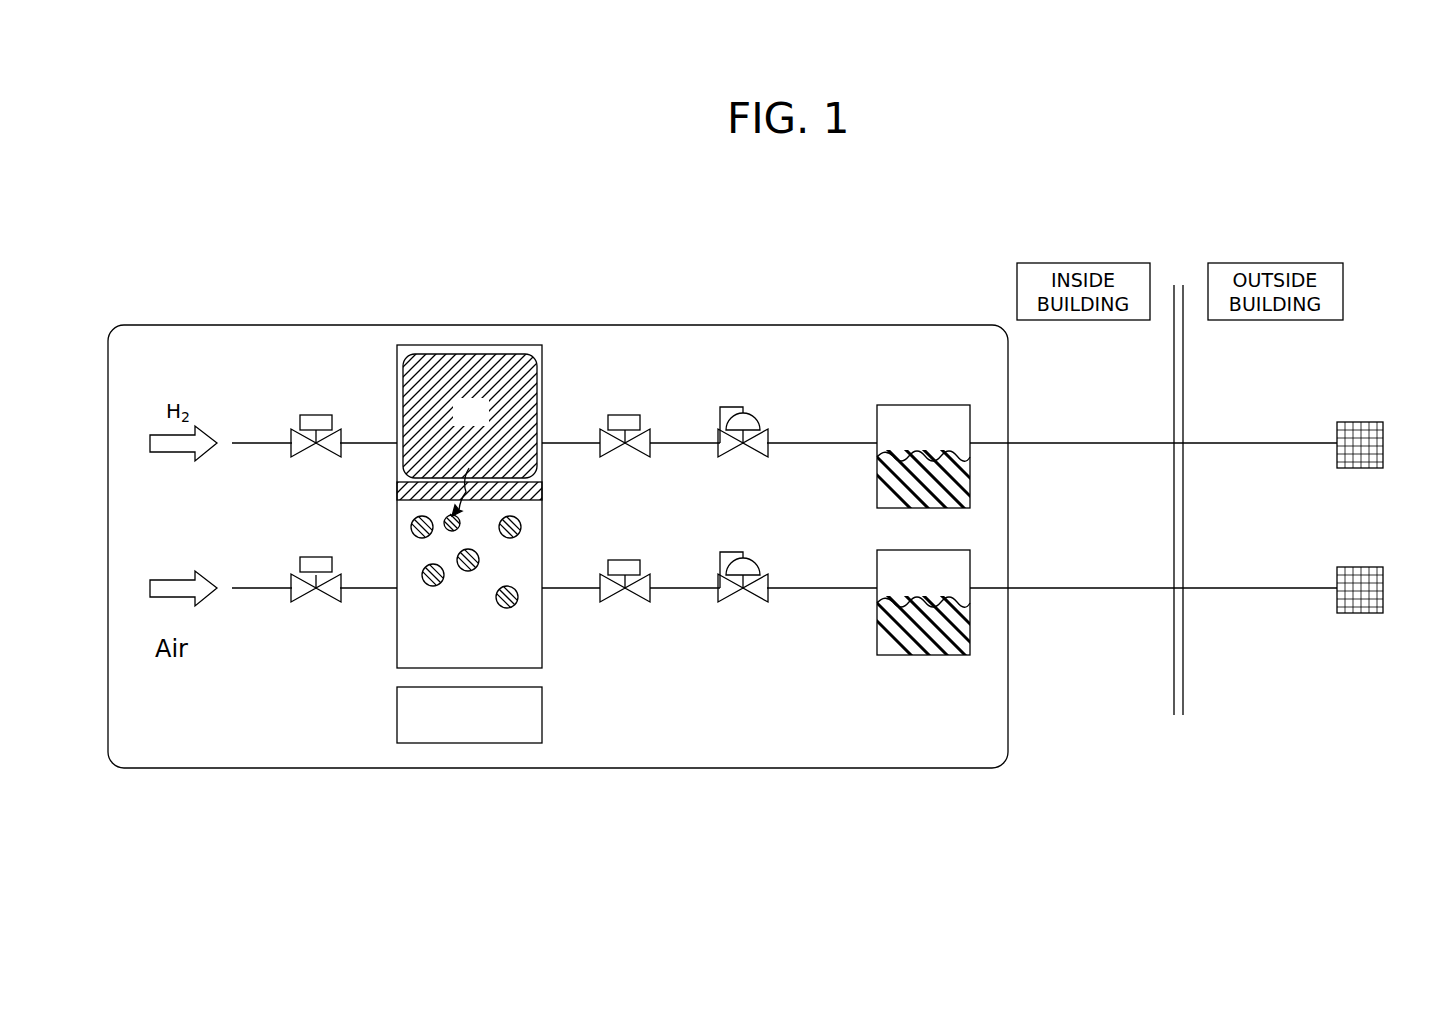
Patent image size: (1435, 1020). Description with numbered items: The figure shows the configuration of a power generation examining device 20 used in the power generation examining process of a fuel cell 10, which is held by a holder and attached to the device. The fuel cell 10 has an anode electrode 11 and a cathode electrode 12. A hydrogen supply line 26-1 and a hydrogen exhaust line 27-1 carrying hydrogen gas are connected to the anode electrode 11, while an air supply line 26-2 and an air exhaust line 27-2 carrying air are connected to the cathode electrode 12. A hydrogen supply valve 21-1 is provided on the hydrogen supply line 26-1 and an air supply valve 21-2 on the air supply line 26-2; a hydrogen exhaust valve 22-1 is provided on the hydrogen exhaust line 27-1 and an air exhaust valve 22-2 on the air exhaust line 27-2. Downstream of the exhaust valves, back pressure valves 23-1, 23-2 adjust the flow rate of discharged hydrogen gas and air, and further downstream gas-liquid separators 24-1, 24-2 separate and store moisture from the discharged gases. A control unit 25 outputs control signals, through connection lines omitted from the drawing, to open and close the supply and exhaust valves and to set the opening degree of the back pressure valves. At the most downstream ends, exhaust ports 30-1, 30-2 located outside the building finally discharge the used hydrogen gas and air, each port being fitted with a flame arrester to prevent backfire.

The power generation examining device 20 is at (208, 325).
The fuel cell 10 is at (465, 503).
The anode electrode 11 is at (397, 376).
The cathode electrode 12 is at (397, 532).
The hydrogen supply valve 21-1 is at (295, 425).
The air supply valve 21-2 is at (295, 570).
The hydrogen exhaust valve 22-1 is at (645, 428).
The air exhaust valve 22-2 is at (645, 573).
The back pressure valve 23-1 is at (765, 428).
The back pressure valve 23-2 is at (765, 573).
The gas-liquid separator 24-1 is at (934, 395).
The gas-liquid separator 24-2 is at (938, 541).
The control unit 25 is at (542, 718).
The hydrogen supply line 26-1 is at (388, 444).
The air supply line 26-2 is at (388, 589).
The hydrogen exhaust line 27-1 is at (556, 444).
The air exhaust line 27-2 is at (556, 589).
The exhaust port 30-1 is at (1375, 422).
The exhaust port 30-2 is at (1375, 567).